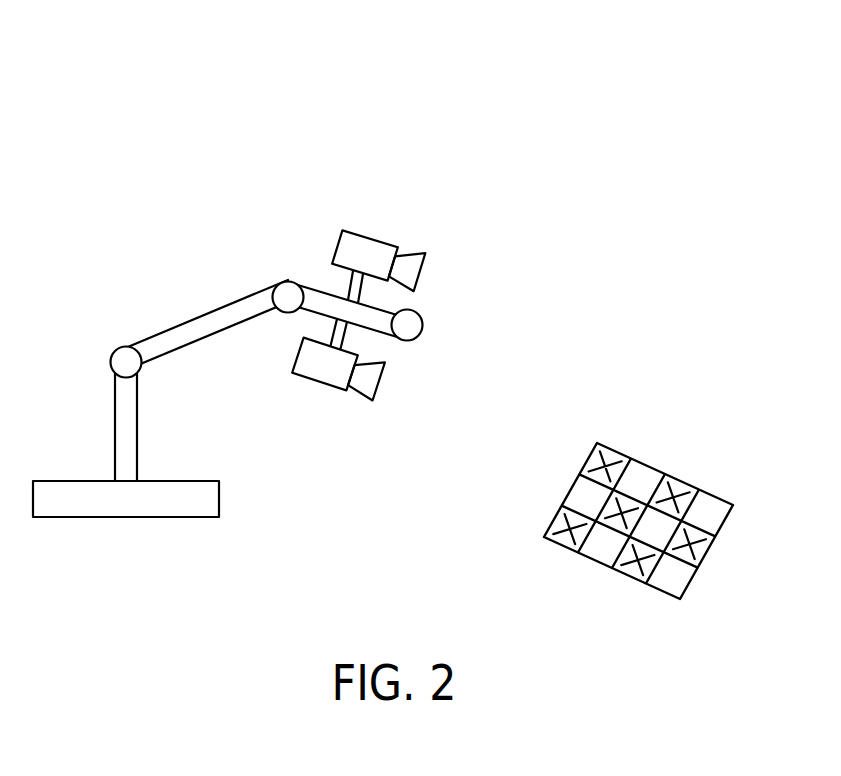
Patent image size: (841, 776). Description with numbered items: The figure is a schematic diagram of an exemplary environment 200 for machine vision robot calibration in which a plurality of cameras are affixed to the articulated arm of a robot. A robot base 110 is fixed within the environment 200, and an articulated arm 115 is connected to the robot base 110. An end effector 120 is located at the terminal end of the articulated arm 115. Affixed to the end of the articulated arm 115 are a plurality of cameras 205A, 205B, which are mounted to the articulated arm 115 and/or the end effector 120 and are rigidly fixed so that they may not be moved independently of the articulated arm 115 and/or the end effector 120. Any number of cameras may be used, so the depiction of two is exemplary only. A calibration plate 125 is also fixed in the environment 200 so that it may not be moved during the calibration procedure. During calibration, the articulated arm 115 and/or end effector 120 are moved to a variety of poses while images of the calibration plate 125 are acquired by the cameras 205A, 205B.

The environment 200 is at (680, 80).
The robot base 110 is at (220, 498).
The articulated arm 115 is at (202, 315).
The end effector 120 is at (423, 324).
The camera 205A is at (373, 238).
The camera 205B is at (314, 388).
The calibration plate 125 is at (685, 480).